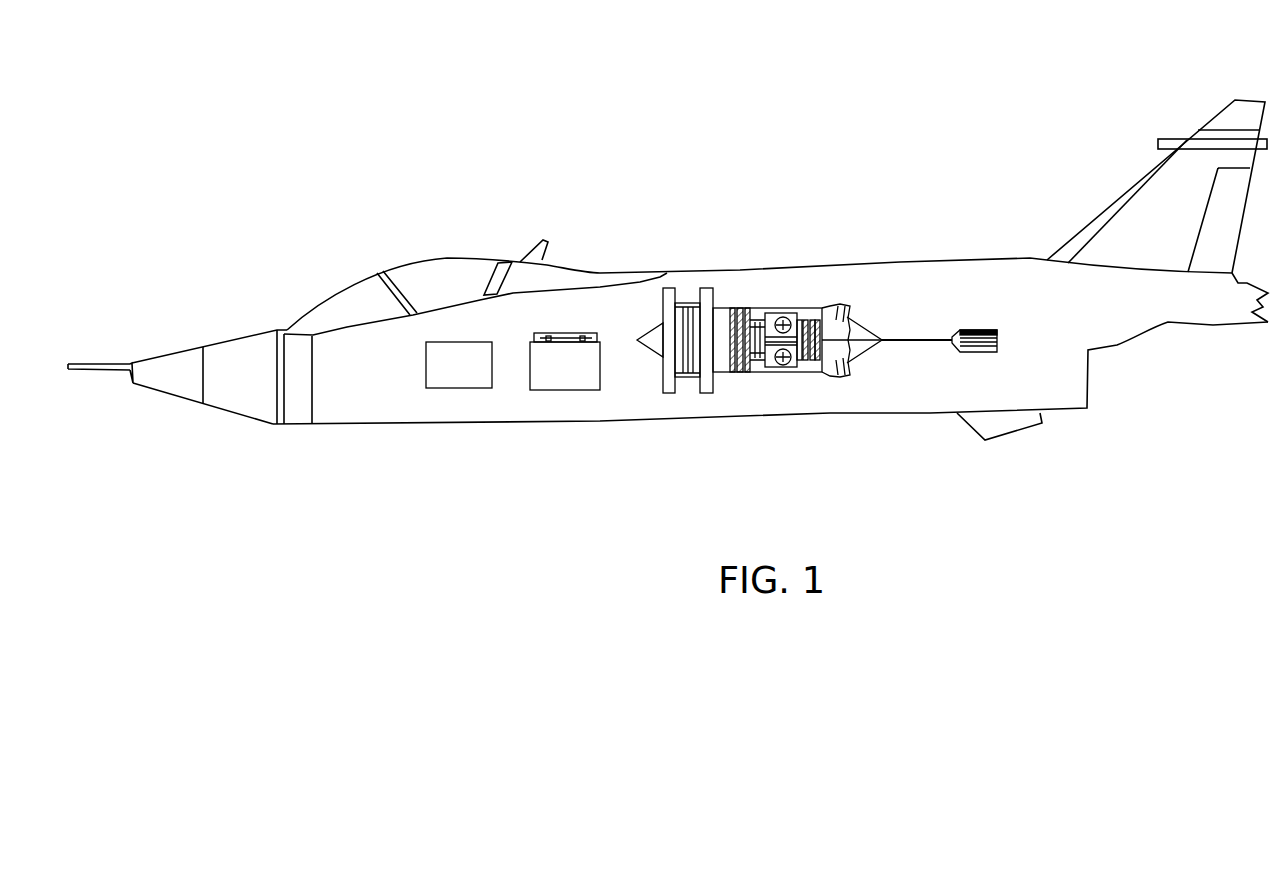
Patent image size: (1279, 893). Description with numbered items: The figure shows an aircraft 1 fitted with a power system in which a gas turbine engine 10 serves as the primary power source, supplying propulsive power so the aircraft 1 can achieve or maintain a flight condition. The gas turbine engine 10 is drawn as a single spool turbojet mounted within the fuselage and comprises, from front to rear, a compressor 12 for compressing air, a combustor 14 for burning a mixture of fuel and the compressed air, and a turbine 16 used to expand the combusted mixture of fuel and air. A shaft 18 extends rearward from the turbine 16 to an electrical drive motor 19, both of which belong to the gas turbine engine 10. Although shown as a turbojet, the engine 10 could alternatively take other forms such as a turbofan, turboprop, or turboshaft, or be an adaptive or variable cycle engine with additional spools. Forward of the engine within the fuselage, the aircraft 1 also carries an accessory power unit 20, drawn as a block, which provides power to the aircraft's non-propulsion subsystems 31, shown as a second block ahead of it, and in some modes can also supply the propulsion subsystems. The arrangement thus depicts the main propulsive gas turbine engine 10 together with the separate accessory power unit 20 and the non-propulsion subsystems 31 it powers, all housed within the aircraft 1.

The aircraft 1 is at (638, 225).
The gas turbine engine 10 is at (754, 351).
The compressor 12 is at (733, 308).
The combustor 14 is at (782, 317).
The turbine 16 is at (797, 372).
The shaft 18 is at (928, 342).
The electrical drive motor 19 is at (978, 330).
The accessory power unit 20 is at (563, 390).
The non-propulsion subsystems 31 is at (457, 388).